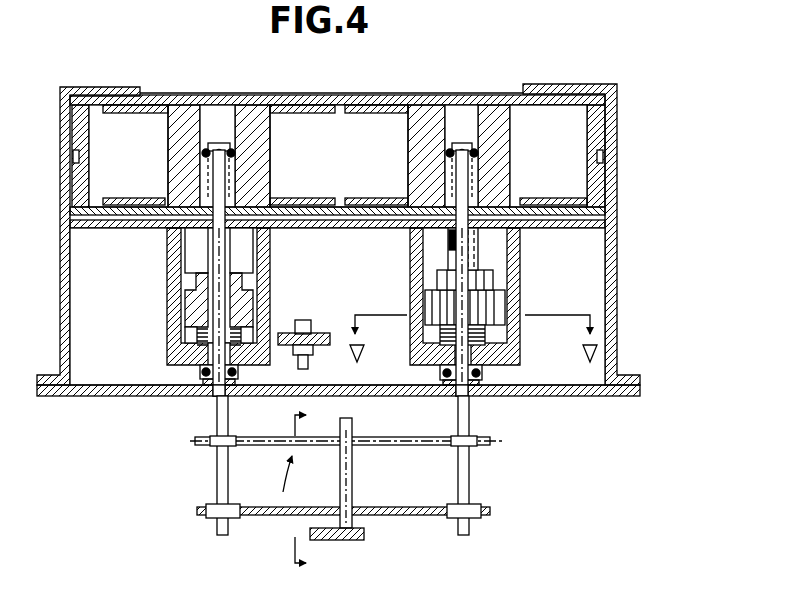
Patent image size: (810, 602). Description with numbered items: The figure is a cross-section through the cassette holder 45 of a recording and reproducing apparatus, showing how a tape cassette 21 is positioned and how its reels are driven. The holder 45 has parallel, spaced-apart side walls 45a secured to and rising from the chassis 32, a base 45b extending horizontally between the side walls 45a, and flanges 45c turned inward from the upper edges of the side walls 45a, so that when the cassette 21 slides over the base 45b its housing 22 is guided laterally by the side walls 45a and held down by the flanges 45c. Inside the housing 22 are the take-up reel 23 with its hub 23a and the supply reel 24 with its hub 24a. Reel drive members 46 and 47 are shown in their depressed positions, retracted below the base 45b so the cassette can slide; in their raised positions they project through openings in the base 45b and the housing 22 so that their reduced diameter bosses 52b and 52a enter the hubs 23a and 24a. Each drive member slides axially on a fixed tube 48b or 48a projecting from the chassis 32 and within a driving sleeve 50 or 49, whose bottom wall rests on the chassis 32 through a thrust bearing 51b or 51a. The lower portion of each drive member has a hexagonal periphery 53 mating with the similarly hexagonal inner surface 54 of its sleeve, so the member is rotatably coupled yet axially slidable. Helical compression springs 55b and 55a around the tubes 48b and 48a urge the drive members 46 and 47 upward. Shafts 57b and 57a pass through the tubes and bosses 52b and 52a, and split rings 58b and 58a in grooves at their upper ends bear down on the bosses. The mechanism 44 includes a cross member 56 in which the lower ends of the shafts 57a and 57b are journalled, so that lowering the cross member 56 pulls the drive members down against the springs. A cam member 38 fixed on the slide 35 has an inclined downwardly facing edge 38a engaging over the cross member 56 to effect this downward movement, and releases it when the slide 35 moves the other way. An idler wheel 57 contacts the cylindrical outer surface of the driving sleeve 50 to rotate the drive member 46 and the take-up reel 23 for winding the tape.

The tape cassette 21 is at (433, 80).
The housing 22 is at (217, 95).
The take-up reel 23 is at (152, 105).
The hub 23a is at (248, 156).
The supply reel 24 is at (390, 105).
The hub 24a is at (417, 158).
The chassis 32 is at (566, 398).
The slide 35 is at (358, 540).
The cam member 38 is at (350, 424).
The inclined downwardly facing edge 38a is at (350, 472).
The mechanism 44 is at (276, 508).
The cassette holder 45 is at (630, 304).
The side walls 45a is at (64, 176).
The base 45b is at (73, 240).
The flanges 45c is at (112, 87).
The reel drive member 46 is at (186, 306).
The reel drive member 47 is at (487, 308).
The fixed tube 48a is at (470, 392).
The fixed tube 48b is at (229, 397).
The driving sleeve 49 is at (424, 352).
The driving sleeve 50 is at (177, 320).
The thrust bearing 51a is at (447, 390).
The thrust bearing 51b is at (203, 396).
The reduced diameter boss 52a is at (470, 143).
The reduced diameter boss 52b is at (208, 143).
The hexagonal periphery 53 is at (270, 297).
The inner surface 54 is at (186, 266).
The helical compression spring 55a is at (503, 338).
The helical compression spring 55b is at (200, 336).
The cross member 56 is at (482, 445).
The idler wheel 57 is at (311, 334).
The shaft 57a is at (468, 470).
The shaft 57b is at (218, 476).
The split ring 58a is at (482, 197).
The split ring 58b is at (255, 197).